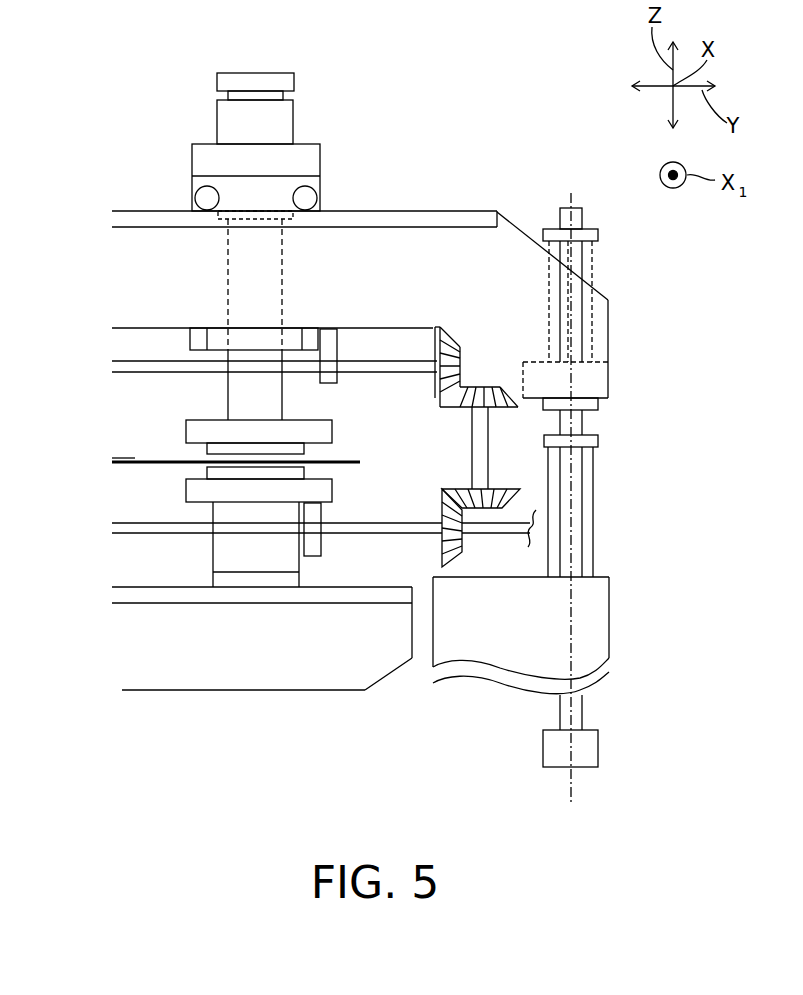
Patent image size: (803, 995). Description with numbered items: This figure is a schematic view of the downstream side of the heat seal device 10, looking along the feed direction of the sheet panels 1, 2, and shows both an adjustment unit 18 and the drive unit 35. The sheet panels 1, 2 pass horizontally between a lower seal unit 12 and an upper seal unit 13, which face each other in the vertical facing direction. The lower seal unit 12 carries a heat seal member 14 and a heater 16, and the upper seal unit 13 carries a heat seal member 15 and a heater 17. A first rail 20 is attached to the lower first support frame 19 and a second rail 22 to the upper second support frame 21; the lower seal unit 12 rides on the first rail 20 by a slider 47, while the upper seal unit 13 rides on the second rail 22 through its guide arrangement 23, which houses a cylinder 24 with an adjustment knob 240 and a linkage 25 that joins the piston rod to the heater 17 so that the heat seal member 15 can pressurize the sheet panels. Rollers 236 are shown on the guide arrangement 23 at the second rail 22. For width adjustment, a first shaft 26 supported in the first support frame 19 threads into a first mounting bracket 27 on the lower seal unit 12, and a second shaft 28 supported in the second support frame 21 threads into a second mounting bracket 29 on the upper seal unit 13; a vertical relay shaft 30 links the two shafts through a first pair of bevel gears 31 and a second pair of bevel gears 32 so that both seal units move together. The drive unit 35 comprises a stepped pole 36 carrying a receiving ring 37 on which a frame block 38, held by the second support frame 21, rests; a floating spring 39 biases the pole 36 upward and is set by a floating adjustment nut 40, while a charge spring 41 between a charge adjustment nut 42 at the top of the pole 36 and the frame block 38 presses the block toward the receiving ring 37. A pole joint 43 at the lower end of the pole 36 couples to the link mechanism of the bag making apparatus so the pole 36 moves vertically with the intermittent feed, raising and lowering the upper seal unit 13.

The heat seal device 10 is at (428, 70).
The sheet panel 1 is at (131, 457).
The sheet panel 2 is at (110, 463).
The lower seal unit 12 is at (181, 503).
The upper seal unit 13 is at (188, 411).
The heat seal member 14 is at (207, 473).
The heat seal member 15 is at (210, 449).
The heater 16 is at (195, 492).
The heater 17 is at (193, 428).
The adjustment unit 18 is at (395, 370).
The first support frame 19 is at (197, 682).
The first rail 20 is at (140, 597).
The second support frame 21 is at (508, 235).
The second rail 22 is at (128, 217).
The guide arrangement 23 is at (330, 156).
The cylinder 24 is at (285, 125).
The linkage 25 is at (282, 313).
The first shaft 26 is at (360, 524).
The first mounting bracket 27 is at (313, 552).
The second shaft 28 is at (380, 346).
The second mounting bracket 29 is at (337, 352).
The relay shaft 30 is at (488, 443).
The first pair of bevel gears 31 is at (460, 489).
The second pair of bevel gears 32 is at (435, 385).
The drive unit 35 is at (589, 497).
The pole 36 is at (580, 428).
The receiving ring 37 is at (598, 406).
The frame block 38 is at (598, 373).
The floating spring 39 is at (593, 552).
The floating adjustment nut 40 is at (598, 442).
The charge spring 41 is at (588, 264).
The charge adjustment nut 42 is at (598, 235).
The pole joint 43 is at (598, 748).
The slider 47 is at (233, 582).
The rollers 236 is at (197, 193).
The adjustment knob 240 is at (260, 80).